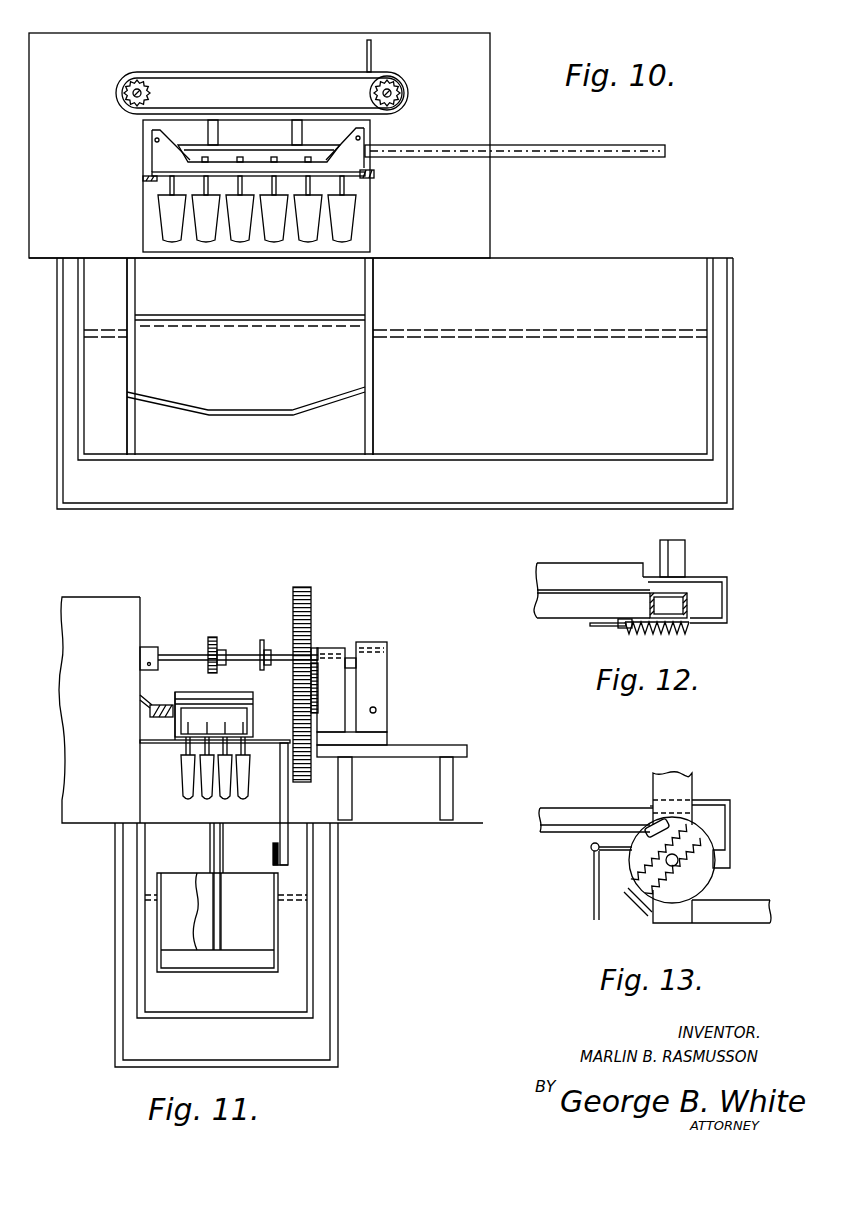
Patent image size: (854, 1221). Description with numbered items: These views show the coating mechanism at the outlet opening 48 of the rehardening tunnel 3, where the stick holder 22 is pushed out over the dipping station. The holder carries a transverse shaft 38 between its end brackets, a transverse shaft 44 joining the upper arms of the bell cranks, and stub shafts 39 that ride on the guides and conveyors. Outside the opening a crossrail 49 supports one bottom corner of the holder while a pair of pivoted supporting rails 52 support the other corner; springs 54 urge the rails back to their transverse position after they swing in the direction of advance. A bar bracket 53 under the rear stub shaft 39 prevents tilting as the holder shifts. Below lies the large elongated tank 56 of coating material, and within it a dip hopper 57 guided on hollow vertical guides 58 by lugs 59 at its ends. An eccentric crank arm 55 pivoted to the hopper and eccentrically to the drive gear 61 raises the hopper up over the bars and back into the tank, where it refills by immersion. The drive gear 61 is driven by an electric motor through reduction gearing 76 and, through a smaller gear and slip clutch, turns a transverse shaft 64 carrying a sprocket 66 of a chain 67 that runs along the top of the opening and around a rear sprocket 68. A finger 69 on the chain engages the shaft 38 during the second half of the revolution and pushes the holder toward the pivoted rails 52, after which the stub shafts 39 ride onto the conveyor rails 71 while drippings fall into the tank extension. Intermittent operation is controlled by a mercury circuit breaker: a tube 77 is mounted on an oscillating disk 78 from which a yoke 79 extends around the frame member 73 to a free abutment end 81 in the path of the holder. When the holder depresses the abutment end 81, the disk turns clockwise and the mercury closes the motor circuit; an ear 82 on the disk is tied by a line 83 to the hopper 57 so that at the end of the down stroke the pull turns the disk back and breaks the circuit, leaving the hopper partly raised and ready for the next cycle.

In FIG. 10, the rehardening tunnel 3 is at (487, 58).
In FIG. 11, the rehardening tunnel 3 is at (98, 608).
In FIG. 10, the stick holder 22 is at (150, 157).
In FIG. 11, the stick holder 22 is at (200, 683).
In FIG. 11, the transverse shaft 38 is at (240, 699).
In FIG. 10, the stub shaft 39 is at (150, 140).
In FIG. 11, the stub shaft 39 is at (177, 694).
In FIG. 11, the transverse shaft 44 is at (217, 703).
In FIG. 10, the outlet opening 48 is at (143, 240).
In FIG. 10, the crossrail 49 is at (148, 176).
In FIG. 12, the crossrail 49 is at (562, 612).
In FIG. 13, the crossrail 49 is at (563, 812).
In FIG. 10, the pivoted supporting rails 52 is at (376, 176).
In FIG. 11, the pivoted supporting rails 52 is at (182, 745).
In FIG. 10, the bar bracket 53 is at (262, 146).
In FIG. 11, the bar bracket 53 is at (150, 712).
In FIG. 11, the springs 54 is at (148, 740).
In FIG. 11, the eccentric crank arm 55 is at (290, 808).
In FIG. 10, the tank 56 is at (660, 262).
In FIG. 11, the tank 56 is at (150, 851).
In FIG. 10, the dip hopper 57 is at (268, 400).
In FIG. 11, the dip hopper 57 is at (262, 913).
In FIG. 10, the vertical guides 58 is at (127, 379).
In FIG. 11, the vertical guides 58 is at (225, 854).
In FIG. 10, the lug 59 is at (128, 431).
In FIG. 11, the lug 59 is at (225, 937).
In FIG. 10, the drive gear 61 is at (405, 95).
In FIG. 11, the drive gear 61 is at (312, 609).
In FIG. 10, the transverse shaft 64 is at (391, 90).
In FIG. 11, the transverse shaft 64 is at (178, 655).
In FIG. 11, the sprocket 66 is at (228, 651).
In FIG. 10, the chain 67 is at (304, 72).
In FIG. 11, the chain 67 is at (212, 637).
In FIG. 10, the sprocket 68 is at (126, 96).
In FIG. 10, the finger 69 is at (370, 38).
In FIG. 10, the conveyor rails 71 is at (605, 145).
In FIG. 12, the frame member 73 is at (688, 606).
In FIG. 13, the frame member 73 is at (690, 784).
In FIG. 11, the reduction gearing 76 is at (382, 686).
In FIG. 12, the tube 77 is at (654, 638).
In FIG. 13, the tube 77 is at (652, 829).
In FIG. 13, the oscillating disk 78 is at (708, 880).
In FIG. 12, the yoke 79 is at (728, 602).
In FIG. 13, the yoke 79 is at (731, 838).
In FIG. 12, the abutment end 81 is at (650, 566).
In FIG. 13, the abutment end 81 is at (651, 806).
In FIG. 12, the ear 82 is at (605, 628).
In FIG. 13, the ear 82 is at (618, 852).
In FIG. 11, the line 83 is at (273, 843).
In FIG. 13, the line 83 is at (596, 907).